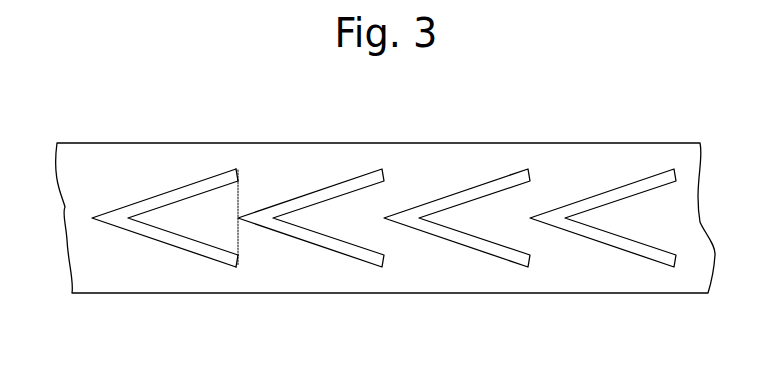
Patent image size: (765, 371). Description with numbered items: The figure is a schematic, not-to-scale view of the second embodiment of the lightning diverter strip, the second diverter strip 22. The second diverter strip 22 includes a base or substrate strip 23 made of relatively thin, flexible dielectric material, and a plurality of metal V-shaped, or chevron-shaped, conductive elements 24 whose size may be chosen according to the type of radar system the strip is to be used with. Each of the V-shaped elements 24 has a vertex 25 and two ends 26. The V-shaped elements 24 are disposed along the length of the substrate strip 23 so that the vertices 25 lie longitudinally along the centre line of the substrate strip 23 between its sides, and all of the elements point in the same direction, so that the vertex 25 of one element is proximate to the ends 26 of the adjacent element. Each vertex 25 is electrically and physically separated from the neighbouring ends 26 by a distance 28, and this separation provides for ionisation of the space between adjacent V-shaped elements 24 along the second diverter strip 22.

The second diverter strip 22 is at (622, 143).
The substrate strip 23 is at (473, 157).
The V-shaped conductive elements 24 is at (352, 177).
The vertex 25 is at (93, 216).
The ends 26 is at (238, 178).
The distance 28 is at (240, 198).